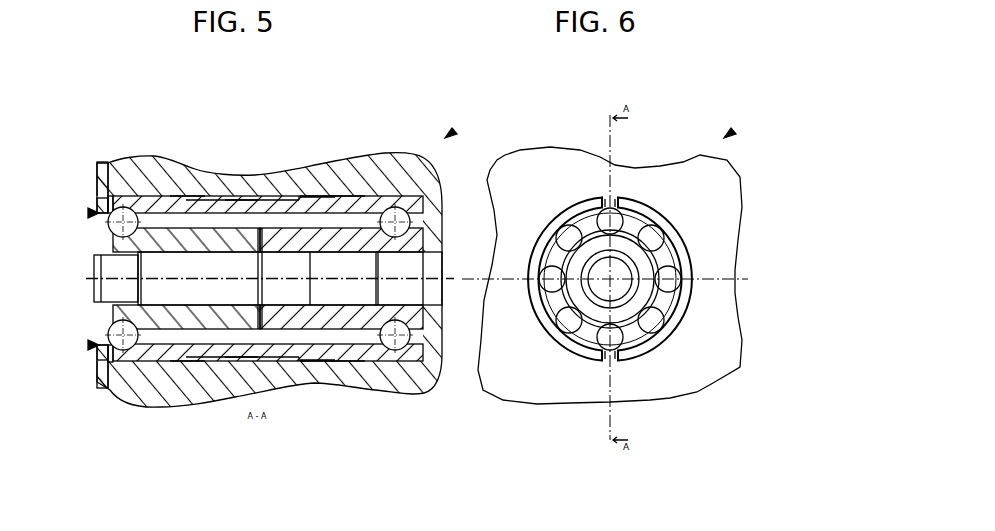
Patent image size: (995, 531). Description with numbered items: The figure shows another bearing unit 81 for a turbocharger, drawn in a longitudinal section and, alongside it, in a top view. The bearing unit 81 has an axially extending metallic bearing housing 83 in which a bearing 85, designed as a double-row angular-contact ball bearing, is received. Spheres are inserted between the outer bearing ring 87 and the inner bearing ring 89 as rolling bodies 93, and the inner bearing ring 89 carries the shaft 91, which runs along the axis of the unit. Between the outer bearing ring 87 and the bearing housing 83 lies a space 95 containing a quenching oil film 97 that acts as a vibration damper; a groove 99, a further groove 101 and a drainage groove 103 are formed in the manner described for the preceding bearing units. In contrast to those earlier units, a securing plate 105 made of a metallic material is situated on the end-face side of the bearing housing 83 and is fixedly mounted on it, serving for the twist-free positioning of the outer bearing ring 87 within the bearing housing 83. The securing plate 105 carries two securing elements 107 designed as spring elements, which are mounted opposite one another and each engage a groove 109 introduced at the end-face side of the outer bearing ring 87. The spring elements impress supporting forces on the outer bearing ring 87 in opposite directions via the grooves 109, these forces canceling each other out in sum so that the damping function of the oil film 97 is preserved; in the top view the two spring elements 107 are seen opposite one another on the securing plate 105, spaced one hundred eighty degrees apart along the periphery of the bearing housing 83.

In FIG. 5, the bearing unit 81 is at (452, 134).
In FIG. 6, the bearing unit 81 is at (731, 134).
In FIG. 5, the bearing housing 83 is at (447, 182).
In FIG. 5, the bearing 85 is at (90, 212).
In FIG. 5, the outer bearing ring 87 is at (413, 196).
In FIG. 6, the outer bearing ring 87 is at (668, 226).
In FIG. 5, the inner bearing ring 89 is at (108, 246).
In FIG. 6, the inner bearing ring 89 is at (645, 263).
In FIG. 5, the shaft 91 is at (118, 278).
In FIG. 6, the shaft 91 is at (613, 279).
In FIG. 5, the rolling body 93 is at (108, 224).
In FIG. 6, the rolling body 93 is at (668, 285).
In FIG. 5, the space 95 is at (316, 197).
In FIG. 5, the oil film 97 is at (318, 431).
In FIG. 5, the groove 99 is at (188, 197).
In FIG. 5, the groove 101 is at (346, 197).
In FIG. 5, the drainage groove 103 is at (241, 200).
In FIG. 5, the securing plate 105 is at (103, 165).
In FIG. 6, the securing plate 105 is at (722, 214).
In FIG. 5, the securing element 107 is at (100, 199).
In FIG. 6, the securing element 107 is at (614, 200).
In FIG. 5, the groove 109 is at (114, 205).
In FIG. 6, the groove 109 is at (614, 200).